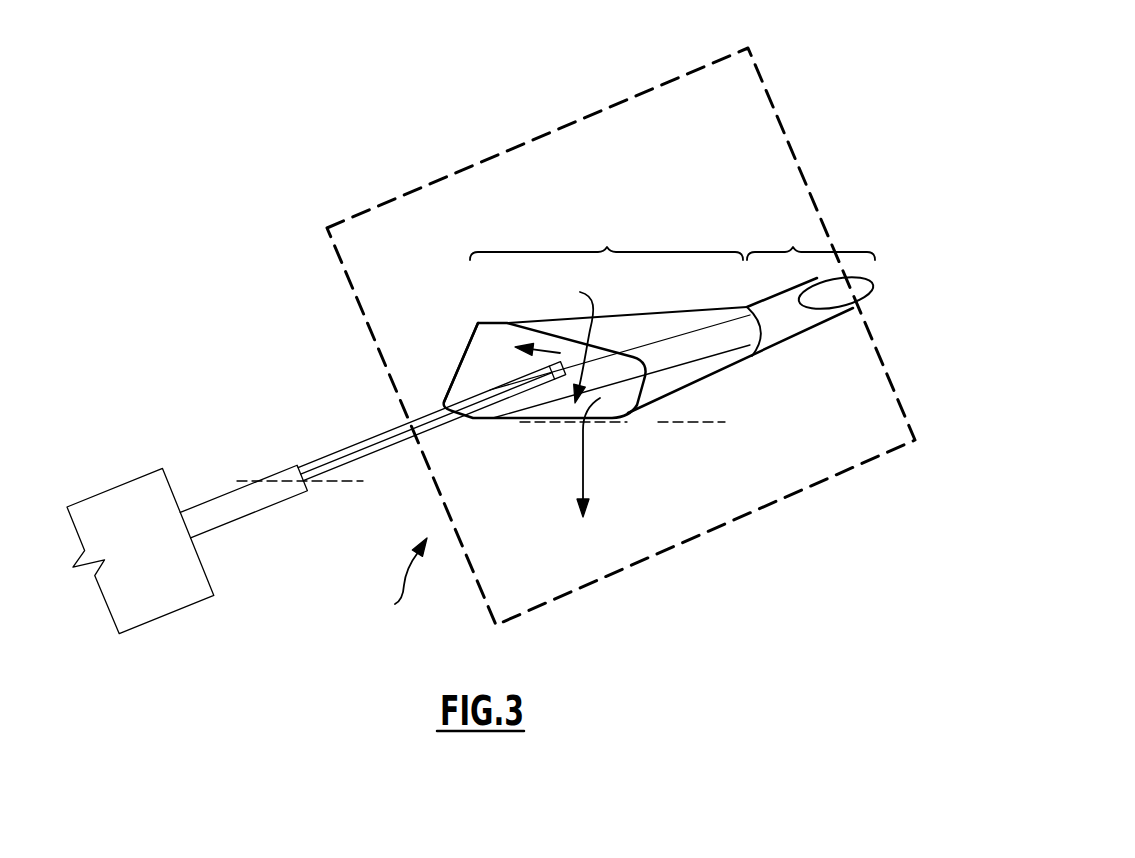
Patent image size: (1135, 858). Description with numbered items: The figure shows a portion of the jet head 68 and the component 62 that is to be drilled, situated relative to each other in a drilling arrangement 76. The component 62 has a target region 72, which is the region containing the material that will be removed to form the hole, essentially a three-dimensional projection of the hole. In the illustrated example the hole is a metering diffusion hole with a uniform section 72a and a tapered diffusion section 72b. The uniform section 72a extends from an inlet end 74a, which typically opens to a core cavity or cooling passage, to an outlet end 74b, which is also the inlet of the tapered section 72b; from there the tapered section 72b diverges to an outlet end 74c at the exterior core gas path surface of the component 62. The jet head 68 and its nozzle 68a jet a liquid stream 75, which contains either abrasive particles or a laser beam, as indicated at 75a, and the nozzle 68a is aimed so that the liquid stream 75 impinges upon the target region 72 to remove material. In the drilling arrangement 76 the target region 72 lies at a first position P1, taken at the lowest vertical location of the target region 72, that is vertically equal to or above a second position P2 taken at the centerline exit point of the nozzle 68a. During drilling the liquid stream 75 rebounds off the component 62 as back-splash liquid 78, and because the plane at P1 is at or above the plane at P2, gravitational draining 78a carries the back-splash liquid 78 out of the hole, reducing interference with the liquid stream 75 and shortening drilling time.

The component 62 is at (408, 193).
The jet head 68 is at (112, 465).
The nozzle 68a is at (220, 493).
The target region 72 is at (672, 331).
The uniform section 72a is at (793, 247).
The tapered section 72b is at (607, 247).
The inlet end 74a is at (838, 293).
The outlet end 74b is at (742, 338).
The outlet end 74c is at (483, 340).
The liquid stream 75 is at (330, 457).
The abrasive particles or laser beam 75a is at (377, 445).
The drilling arrangement 76 is at (395, 604).
The back-splash liquid 78 is at (545, 352).
The gravitational draining 78a is at (583, 475).
The first position P1 is at (548, 423).
The second position P2 is at (348, 483).